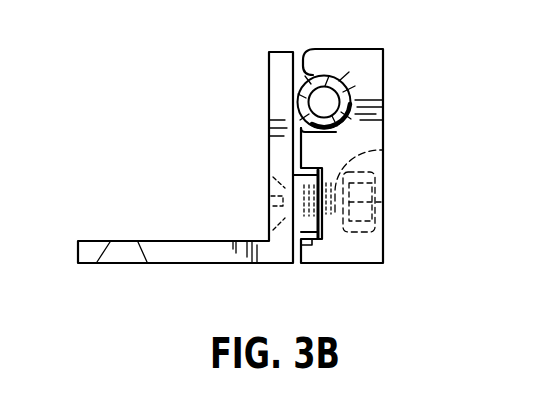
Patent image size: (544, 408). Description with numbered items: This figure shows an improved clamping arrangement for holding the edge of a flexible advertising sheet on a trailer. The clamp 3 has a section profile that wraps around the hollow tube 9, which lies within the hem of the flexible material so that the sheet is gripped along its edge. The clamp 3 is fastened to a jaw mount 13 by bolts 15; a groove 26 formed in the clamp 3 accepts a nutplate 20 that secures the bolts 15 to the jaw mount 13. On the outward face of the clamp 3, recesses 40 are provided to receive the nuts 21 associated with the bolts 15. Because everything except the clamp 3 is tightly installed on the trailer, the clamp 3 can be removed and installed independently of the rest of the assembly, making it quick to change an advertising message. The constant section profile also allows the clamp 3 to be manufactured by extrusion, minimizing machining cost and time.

The clamp 3 is at (382, 88).
The hollow tube 9 is at (297, 98).
The jaw mount 13 is at (285, 62).
The bolt 15 is at (386, 150).
The nutplate 20 is at (308, 227).
The nut 21 is at (384, 205).
The groove 26 is at (306, 241).
The recess 40 is at (385, 177).